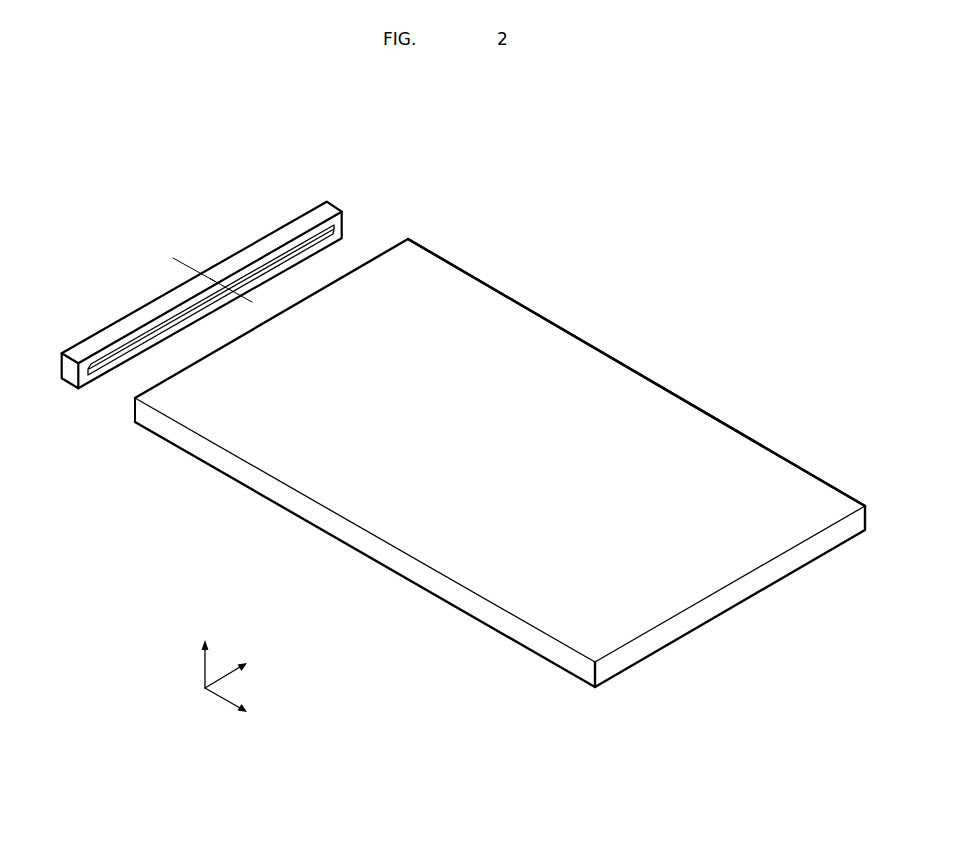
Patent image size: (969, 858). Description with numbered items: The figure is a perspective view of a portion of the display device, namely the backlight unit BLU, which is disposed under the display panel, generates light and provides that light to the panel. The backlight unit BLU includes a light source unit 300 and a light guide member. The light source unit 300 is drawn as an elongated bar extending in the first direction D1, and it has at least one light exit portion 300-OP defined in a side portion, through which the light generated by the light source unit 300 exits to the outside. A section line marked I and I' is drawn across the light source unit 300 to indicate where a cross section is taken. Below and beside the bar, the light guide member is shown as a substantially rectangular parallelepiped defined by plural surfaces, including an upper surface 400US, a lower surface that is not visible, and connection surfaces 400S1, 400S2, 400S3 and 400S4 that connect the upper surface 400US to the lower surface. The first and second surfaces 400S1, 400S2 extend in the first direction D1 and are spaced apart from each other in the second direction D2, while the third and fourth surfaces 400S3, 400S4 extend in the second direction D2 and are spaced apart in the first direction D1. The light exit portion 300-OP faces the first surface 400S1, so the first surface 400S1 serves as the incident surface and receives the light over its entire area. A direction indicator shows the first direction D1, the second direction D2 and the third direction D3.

The light source unit 300 is at (211, 266).
The light exit portion 300-OP is at (121, 347).
The backlight unit BLU is at (483, 418).
The upper surface 400US is at (480, 293).
The first surface 400S1 is at (135, 402).
The second surface 400S2 is at (723, 598).
The third surface 400S3 is at (265, 483).
The fourth surface 400S4 is at (573, 332).
The section line I is at (212, 269).
The section line I' is at (249, 291).
The first direction D1 is at (237, 664).
The second direction D2 is at (241, 712).
The third direction D3 is at (207, 653).